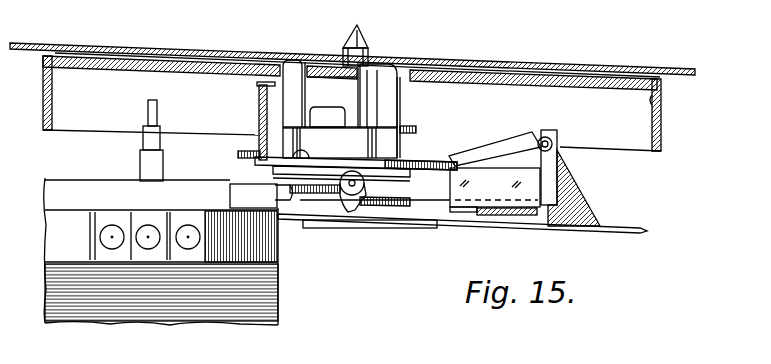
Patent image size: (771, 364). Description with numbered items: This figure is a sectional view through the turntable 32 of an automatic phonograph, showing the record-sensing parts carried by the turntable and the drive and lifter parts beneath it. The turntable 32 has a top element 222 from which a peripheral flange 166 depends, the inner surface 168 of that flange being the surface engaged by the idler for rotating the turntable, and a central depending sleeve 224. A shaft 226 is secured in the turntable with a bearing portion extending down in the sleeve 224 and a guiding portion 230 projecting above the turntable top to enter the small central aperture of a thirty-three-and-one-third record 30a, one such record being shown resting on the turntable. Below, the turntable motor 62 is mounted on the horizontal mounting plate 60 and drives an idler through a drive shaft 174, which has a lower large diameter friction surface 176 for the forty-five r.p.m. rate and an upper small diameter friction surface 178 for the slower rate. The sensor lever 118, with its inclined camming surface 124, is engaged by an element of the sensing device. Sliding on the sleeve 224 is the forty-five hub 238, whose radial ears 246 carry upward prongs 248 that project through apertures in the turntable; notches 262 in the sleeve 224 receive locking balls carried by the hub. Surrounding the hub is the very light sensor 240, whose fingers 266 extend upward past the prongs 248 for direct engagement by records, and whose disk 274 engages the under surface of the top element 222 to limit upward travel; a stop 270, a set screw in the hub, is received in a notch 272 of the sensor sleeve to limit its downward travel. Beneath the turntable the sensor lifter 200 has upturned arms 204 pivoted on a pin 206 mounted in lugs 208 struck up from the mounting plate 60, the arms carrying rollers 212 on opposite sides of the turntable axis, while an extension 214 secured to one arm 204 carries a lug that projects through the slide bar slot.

The 33⅓ record 30a is at (522, 66).
The turntable 32 is at (666, 148).
The mounting plate 60 is at (634, 233).
The turntable motor 62 is at (77, 327).
The sensor lever 118 is at (257, 121).
The camming surface 124 is at (258, 90).
The peripheral flange 166 is at (662, 127).
The inner surface of the flange 168 is at (663, 102).
The drive shaft 174 is at (138, 161).
The large diameter friction surface 176 is at (145, 142).
The small diameter friction surface 178 is at (146, 107).
The sensor lifter 200 is at (440, 207).
The upturned arms 204 is at (402, 190).
The pin 206 is at (553, 141).
The lugs 208 is at (583, 206).
The rollers 212 is at (350, 200).
The extension 214 is at (525, 215).
The top element 222 is at (554, 87).
The central depending sleeve 224 is at (352, 100).
The shaft 226 is at (372, 44).
The guiding portion 230 is at (352, 40).
The 45 hub 238 is at (457, 160).
The sensor 240 is at (420, 136).
The ears 246 is at (416, 130).
The prong 248 is at (400, 113).
The notches 262 is at (329, 112).
The fingers 266 is at (358, 140).
The stop 270 is at (305, 194).
The notch 272 is at (261, 197).
The disk 274 is at (238, 153).